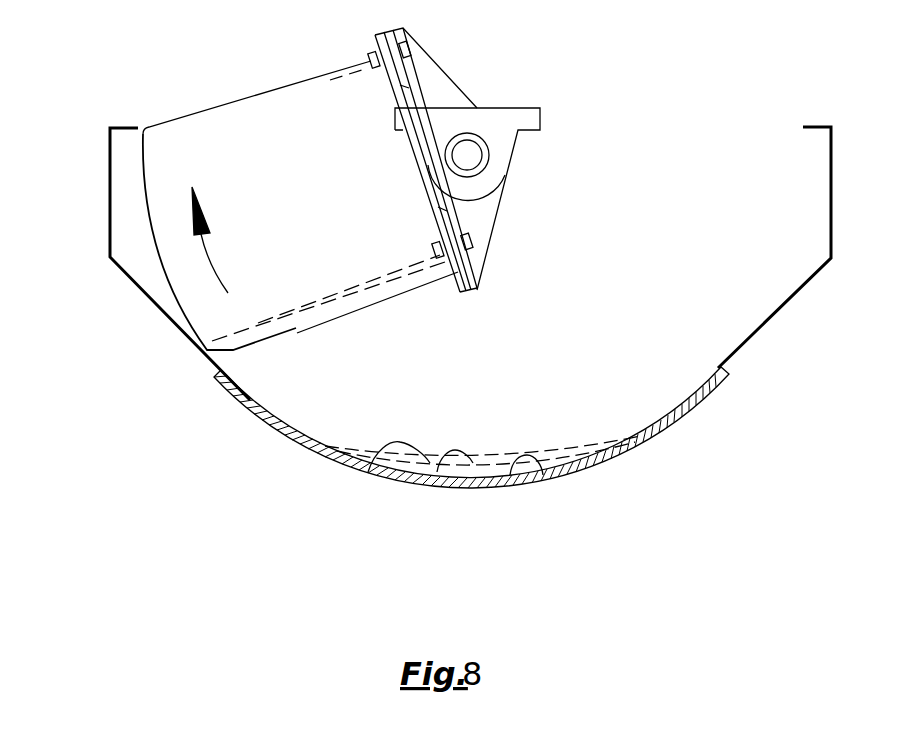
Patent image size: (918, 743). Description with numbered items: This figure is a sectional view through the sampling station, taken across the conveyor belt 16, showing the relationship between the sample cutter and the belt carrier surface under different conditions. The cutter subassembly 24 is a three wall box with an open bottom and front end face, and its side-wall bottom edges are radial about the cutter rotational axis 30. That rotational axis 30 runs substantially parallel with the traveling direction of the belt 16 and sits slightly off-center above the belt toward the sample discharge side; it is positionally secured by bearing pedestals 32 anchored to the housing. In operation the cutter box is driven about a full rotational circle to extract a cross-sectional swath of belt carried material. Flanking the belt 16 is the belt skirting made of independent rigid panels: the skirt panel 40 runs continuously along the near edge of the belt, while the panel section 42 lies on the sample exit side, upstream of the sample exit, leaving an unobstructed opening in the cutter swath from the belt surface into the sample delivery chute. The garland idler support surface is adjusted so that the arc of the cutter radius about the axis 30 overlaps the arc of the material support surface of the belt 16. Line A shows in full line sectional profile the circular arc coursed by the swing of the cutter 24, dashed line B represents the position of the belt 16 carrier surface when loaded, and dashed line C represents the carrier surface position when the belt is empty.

The belt 16 is at (627, 447).
The cutter subassembly 24 is at (338, 218).
The cutter rotational axis 30 is at (467, 155).
The bearing pedestals 32 is at (482, 120).
The skirt panel 40 is at (829, 205).
The panel section 42 is at (108, 196).
The line A is at (543, 475).
The dashed line B is at (437, 472).
The dashed line C is at (368, 472).